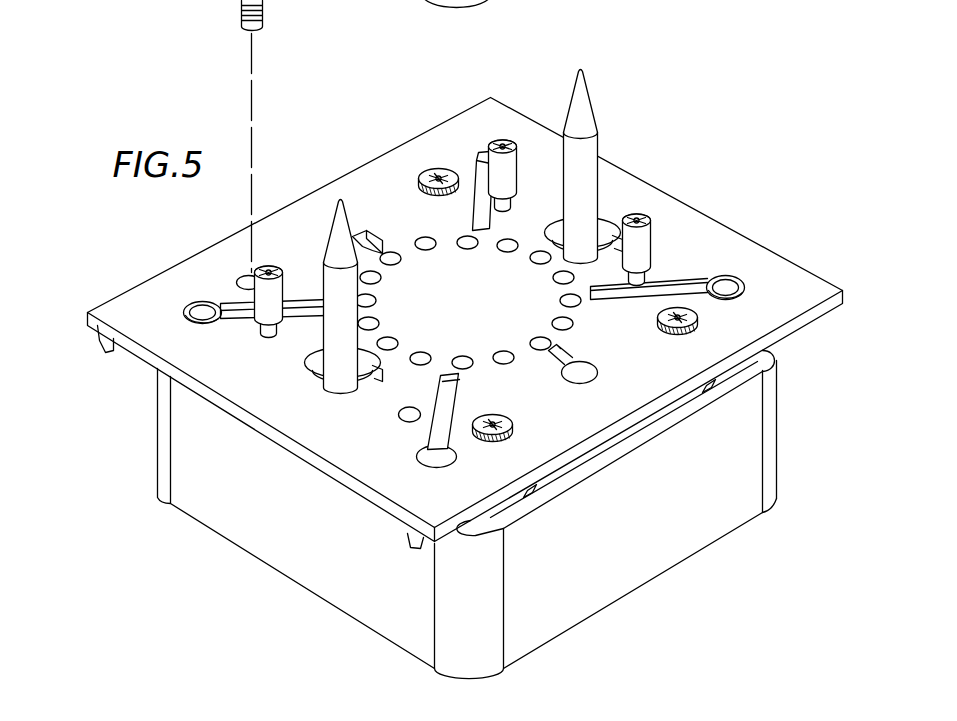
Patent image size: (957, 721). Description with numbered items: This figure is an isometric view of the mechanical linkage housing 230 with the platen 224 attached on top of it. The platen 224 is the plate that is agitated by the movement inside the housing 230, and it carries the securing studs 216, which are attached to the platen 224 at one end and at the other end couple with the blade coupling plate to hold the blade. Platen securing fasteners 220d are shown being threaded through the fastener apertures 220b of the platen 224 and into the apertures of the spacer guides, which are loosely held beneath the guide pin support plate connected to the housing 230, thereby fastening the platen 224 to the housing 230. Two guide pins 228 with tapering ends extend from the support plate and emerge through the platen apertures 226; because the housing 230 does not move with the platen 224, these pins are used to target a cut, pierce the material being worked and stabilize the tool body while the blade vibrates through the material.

The securing studs 216 is at (255, 270).
The fastener aperture—platen 220b is at (405, 418).
The platen securing fastener 220d is at (193, 0).
The platen 224 is at (353, 182).
The platen apertures 226 is at (307, 350).
The guide pins 228 is at (333, 232).
The mechanical linkage housing 230 is at (655, 538).